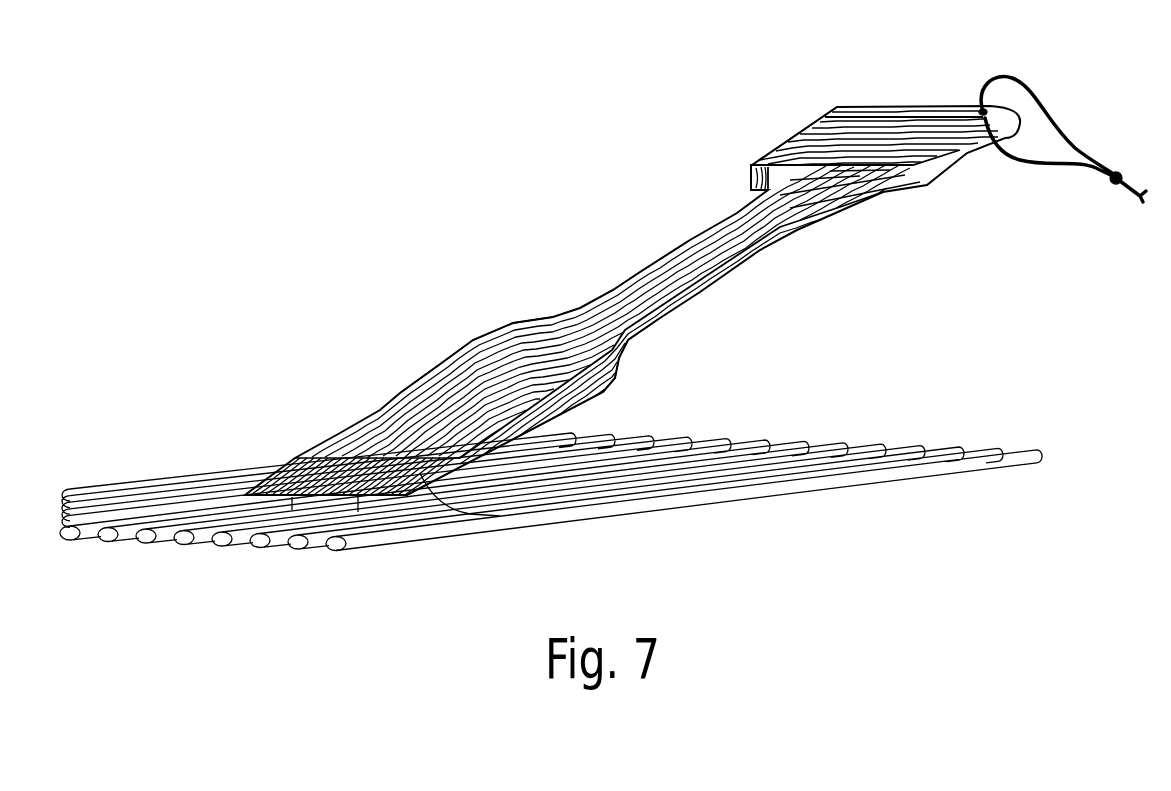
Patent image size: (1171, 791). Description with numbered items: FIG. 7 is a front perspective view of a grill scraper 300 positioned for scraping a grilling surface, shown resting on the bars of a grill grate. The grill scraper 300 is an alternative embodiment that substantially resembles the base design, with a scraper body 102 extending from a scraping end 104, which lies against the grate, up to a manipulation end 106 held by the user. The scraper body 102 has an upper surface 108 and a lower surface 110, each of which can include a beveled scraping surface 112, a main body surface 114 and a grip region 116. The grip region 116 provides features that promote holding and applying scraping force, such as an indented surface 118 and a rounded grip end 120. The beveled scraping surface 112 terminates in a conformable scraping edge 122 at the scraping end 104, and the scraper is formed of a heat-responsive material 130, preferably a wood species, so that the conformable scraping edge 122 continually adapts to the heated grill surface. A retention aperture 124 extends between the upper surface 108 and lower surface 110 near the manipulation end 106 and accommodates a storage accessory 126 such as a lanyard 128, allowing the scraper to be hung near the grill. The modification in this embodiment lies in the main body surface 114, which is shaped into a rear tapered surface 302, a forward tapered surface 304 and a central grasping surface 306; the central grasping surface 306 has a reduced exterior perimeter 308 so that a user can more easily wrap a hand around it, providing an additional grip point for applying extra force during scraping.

The grill scraper 300 is at (551, 290).
The scraper body 102 is at (551, 492).
The scraping end 104 is at (358, 497).
The manipulation end 106 is at (881, 157).
The upper surface 108 is at (450, 371).
The lower surface 110 is at (602, 385).
The beveled scraping surface 112 is at (500, 516).
The main body surface 114 is at (642, 272).
The grip region 116 is at (817, 122).
The indented surface 118 is at (808, 140).
The rounded grip end 120 is at (875, 106).
The conformable scraping edge 122 is at (292, 497).
The retention aperture 124 is at (985, 108).
The storage accessory 126 is at (1060, 115).
The lanyard 128 is at (1060, 160).
The heat-responsive material 130 is at (293, 470).
The rear tapered surface 302 is at (867, 177).
The forward tapered surface 304 is at (620, 340).
The central grasping surface 306 is at (706, 276).
The reduced exterior perimeter 308 is at (697, 236).